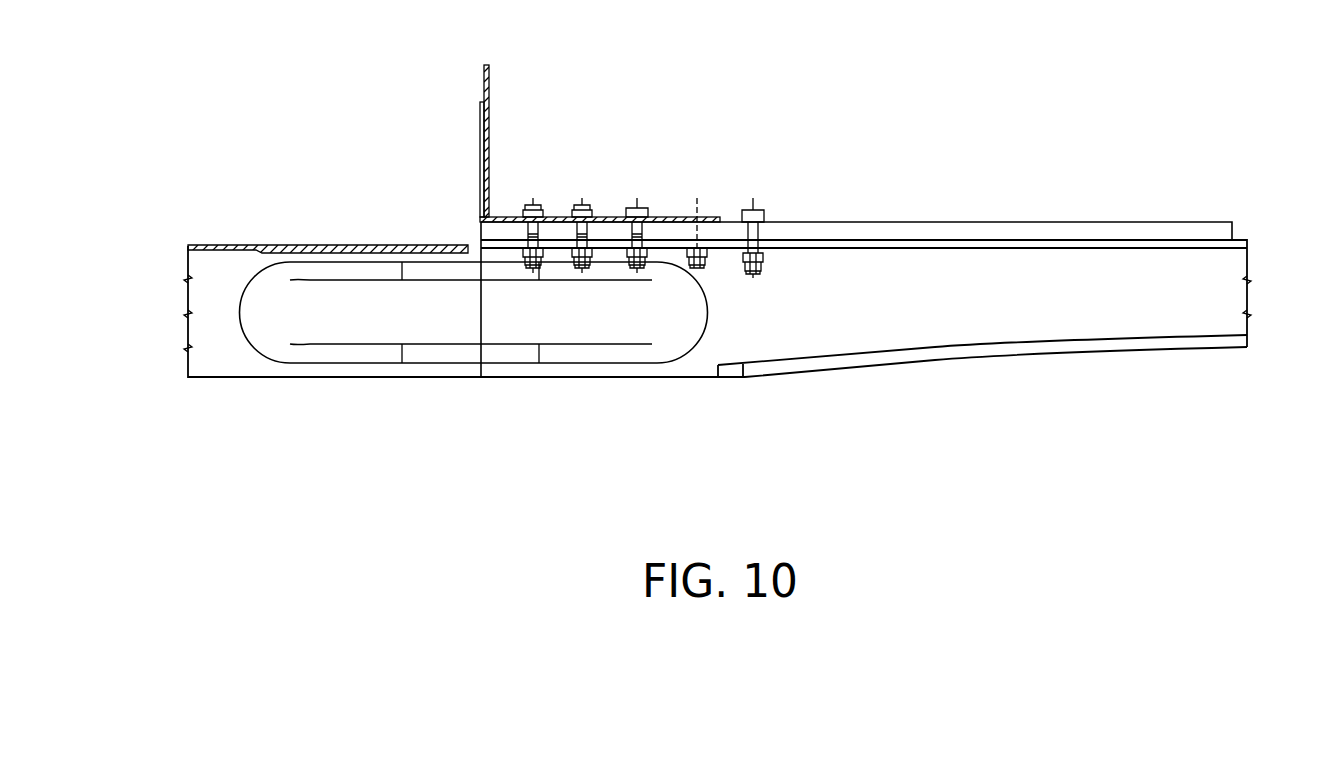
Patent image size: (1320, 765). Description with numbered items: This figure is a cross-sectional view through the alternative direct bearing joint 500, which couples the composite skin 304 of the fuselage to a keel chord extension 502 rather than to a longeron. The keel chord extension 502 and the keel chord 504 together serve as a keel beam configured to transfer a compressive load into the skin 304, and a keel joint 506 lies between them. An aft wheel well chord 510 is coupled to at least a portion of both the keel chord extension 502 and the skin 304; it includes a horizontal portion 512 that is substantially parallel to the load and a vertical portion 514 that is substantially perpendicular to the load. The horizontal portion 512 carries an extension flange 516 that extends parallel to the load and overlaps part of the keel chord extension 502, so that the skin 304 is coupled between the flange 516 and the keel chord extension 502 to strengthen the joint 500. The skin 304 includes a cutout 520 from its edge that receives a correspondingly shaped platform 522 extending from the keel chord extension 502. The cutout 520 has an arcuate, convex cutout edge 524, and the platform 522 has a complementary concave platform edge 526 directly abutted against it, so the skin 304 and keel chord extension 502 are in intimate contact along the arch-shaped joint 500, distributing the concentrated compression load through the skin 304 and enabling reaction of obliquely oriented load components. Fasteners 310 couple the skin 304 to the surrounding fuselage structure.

The composite skin 304 is at (1089, 214).
The fastener 310 is at (764, 215).
The direct bearing joint 500 is at (606, 256).
The keel chord extension 502 is at (788, 315).
The keel chord 504 is at (222, 368).
The keel joint 506 is at (470, 389).
The aft wheel well chord 510 is at (531, 139).
The horizontal portion 512 is at (600, 191).
The vertical portion 514 is at (480, 105).
The extension flange 516 is at (690, 218).
The cutout 520 is at (600, 226).
The platform 522 is at (558, 230).
The cutout edge 524 is at (617, 222).
The platform edge 526 is at (607, 222).